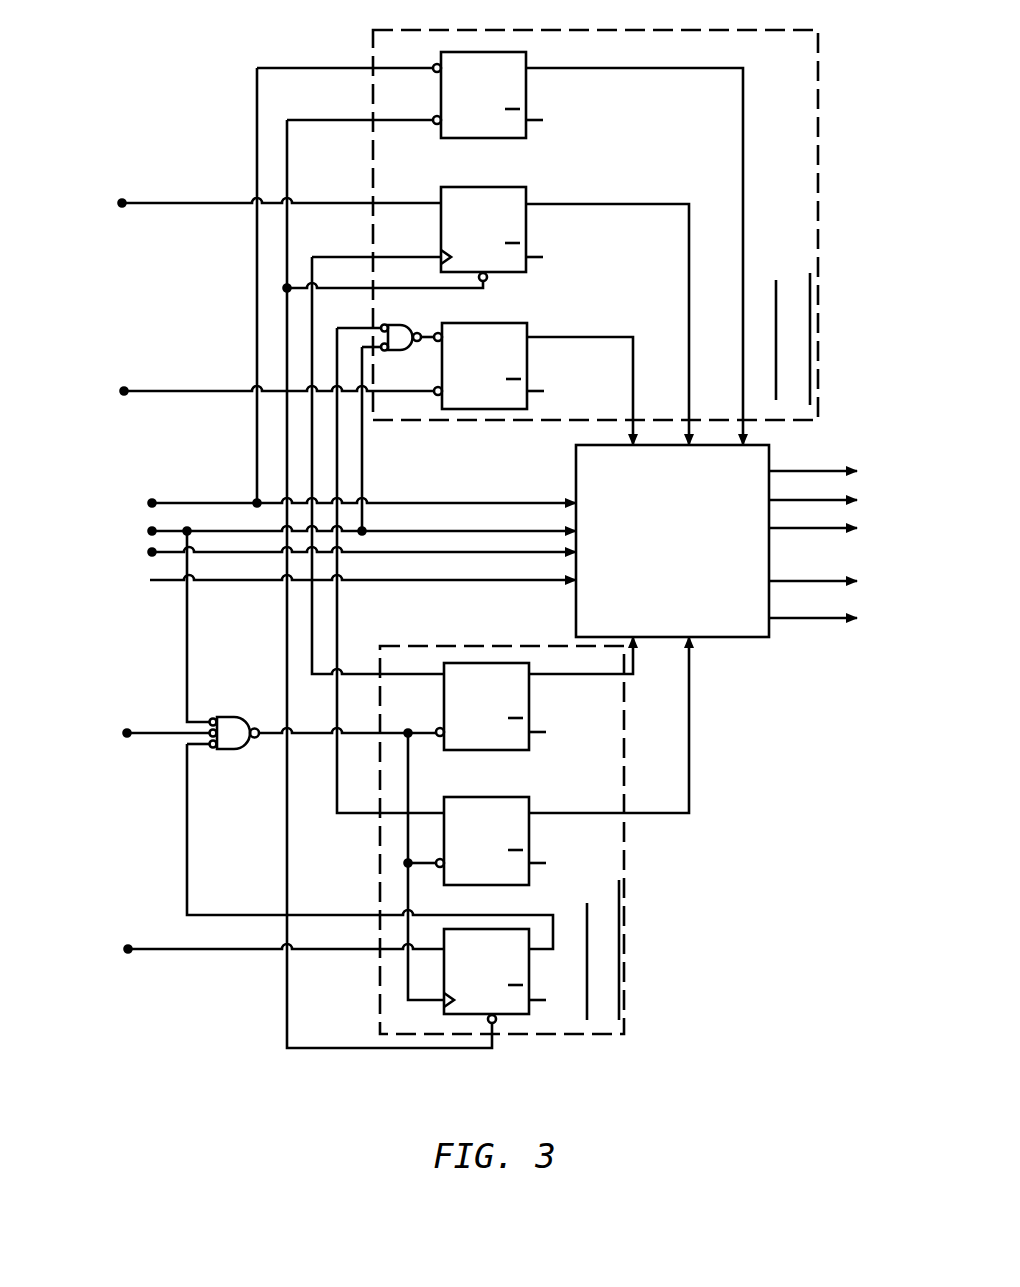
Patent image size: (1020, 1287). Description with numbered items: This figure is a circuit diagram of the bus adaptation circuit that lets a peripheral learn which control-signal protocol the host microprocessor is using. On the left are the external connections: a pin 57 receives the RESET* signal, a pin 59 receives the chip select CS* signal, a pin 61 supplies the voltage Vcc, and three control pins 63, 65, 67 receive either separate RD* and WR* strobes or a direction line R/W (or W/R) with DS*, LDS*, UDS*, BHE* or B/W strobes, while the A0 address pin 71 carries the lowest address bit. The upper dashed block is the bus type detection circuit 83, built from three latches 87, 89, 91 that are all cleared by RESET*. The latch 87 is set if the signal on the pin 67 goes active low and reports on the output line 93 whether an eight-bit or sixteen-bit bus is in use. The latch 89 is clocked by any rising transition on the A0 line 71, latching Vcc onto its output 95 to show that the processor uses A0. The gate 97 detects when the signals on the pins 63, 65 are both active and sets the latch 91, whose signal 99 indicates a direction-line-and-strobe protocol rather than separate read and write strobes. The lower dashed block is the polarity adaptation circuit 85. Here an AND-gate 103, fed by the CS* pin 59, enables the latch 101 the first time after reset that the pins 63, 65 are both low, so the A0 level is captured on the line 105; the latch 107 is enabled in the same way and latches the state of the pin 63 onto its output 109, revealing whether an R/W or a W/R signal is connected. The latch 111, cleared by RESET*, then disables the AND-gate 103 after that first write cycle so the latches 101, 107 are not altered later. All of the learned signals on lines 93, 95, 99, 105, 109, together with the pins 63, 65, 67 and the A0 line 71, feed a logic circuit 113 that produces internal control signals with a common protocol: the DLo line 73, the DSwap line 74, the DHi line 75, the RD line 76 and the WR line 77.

The pin 57 is at (124, 391).
The pin 59 is at (127, 733).
The pin 61 is at (122, 203).
The pin 63 is at (152, 554).
The pin 65 is at (152, 531).
The pin 67 is at (152, 503).
The A0 address pin 71 is at (260, 582).
The DLo line 73 is at (810, 471).
The DSwap line 74 is at (795, 500).
The DHi line 75 is at (822, 528).
The RD line 76 is at (805, 581).
The WR line 77 is at (803, 618).
The bus type detection circuit 83 is at (800, 199).
The polarity adaptation circuit 85 is at (588, 859).
The latch 87 is at (462, 139).
The latch 89 is at (482, 187).
The latch 91 is at (497, 323).
The output line 93 is at (630, 68).
The output 95 is at (573, 204).
The gate 97 is at (400, 325).
The signal 99 is at (557, 337).
The latch 101 is at (486, 663).
The AND-gate 103 is at (222, 717).
The line 105 is at (540, 676).
The latch 107 is at (483, 797).
The output 109 is at (540, 815).
The latch 111 is at (517, 1016).
The logic circuit 113 is at (728, 637).